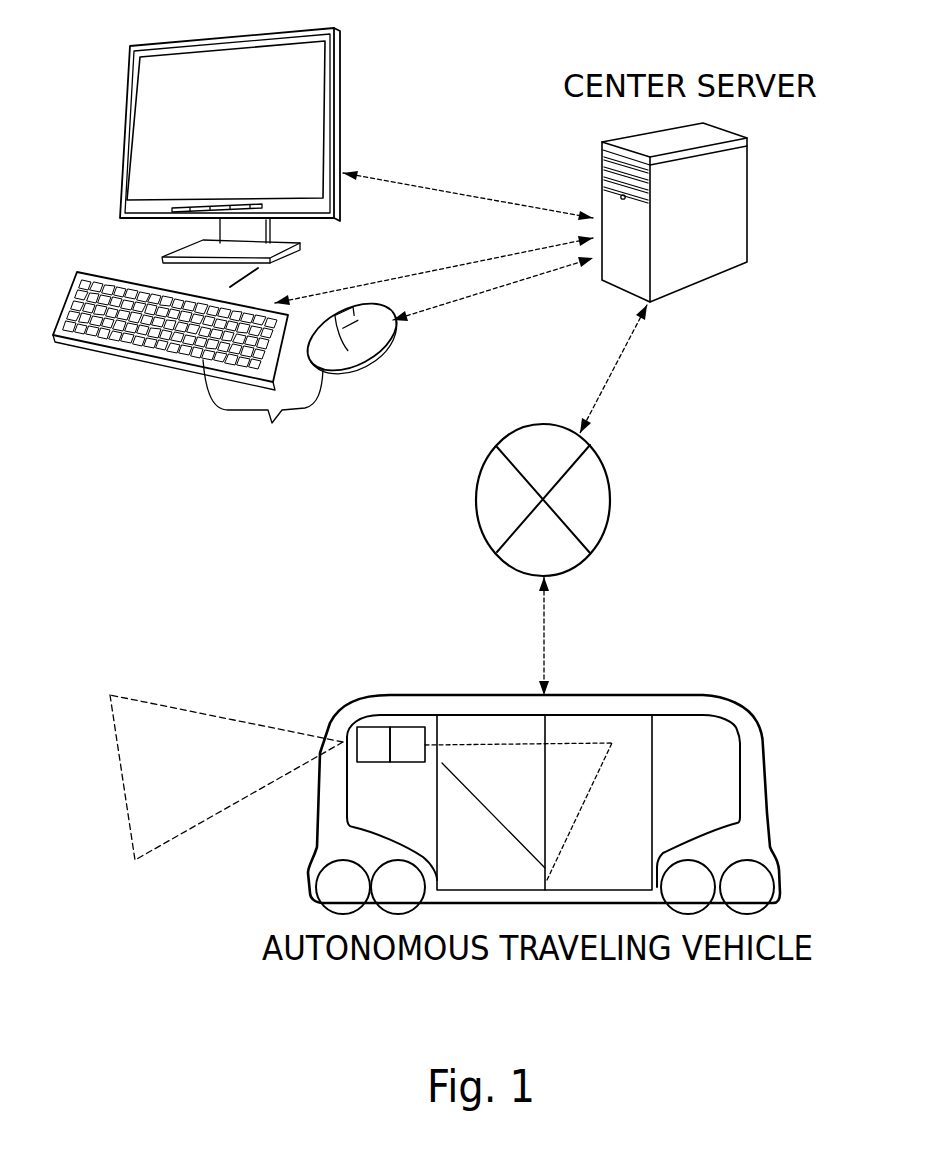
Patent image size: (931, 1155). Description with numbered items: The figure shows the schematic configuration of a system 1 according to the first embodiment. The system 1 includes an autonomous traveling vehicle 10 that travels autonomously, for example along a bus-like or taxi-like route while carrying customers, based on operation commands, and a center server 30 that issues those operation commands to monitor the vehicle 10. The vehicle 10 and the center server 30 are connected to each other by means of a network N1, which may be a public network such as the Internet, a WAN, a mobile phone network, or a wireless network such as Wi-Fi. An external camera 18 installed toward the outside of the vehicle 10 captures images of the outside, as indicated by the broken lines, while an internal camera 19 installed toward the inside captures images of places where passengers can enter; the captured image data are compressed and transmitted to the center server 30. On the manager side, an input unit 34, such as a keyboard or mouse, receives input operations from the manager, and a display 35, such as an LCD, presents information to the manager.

The system 1 is at (693, 407).
The autonomous traveling vehicle 10 is at (445, 754).
The external camera 18 is at (375, 743).
The internal camera 19 is at (410, 743).
The center server 30 is at (603, 202).
The input unit 34 is at (231, 371).
The display 35 is at (340, 117).
The network N1 is at (578, 567).